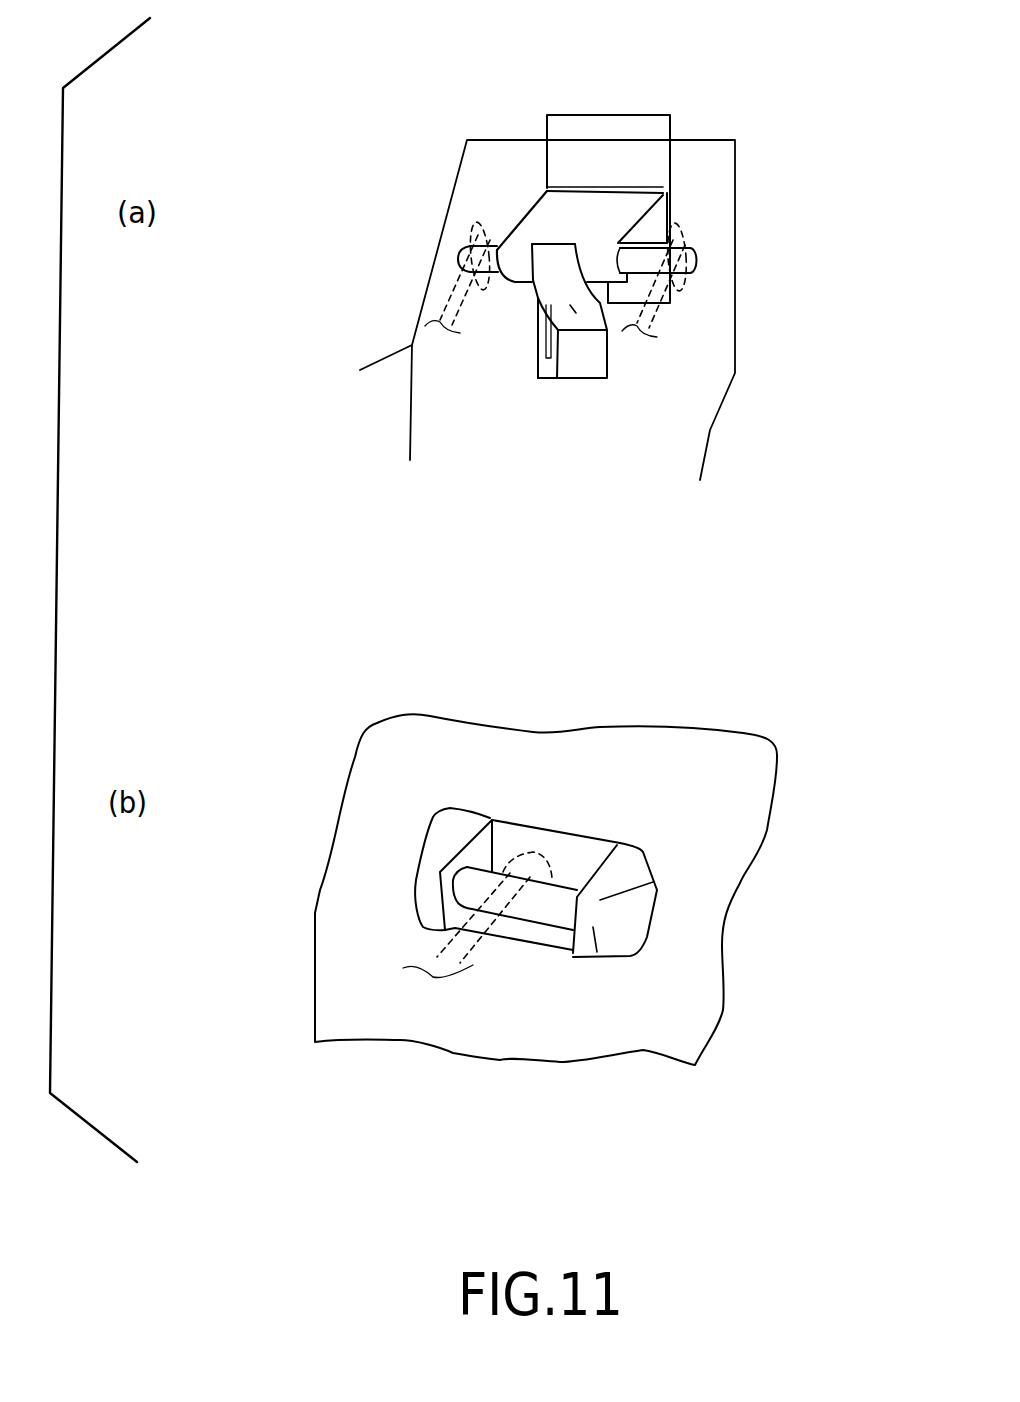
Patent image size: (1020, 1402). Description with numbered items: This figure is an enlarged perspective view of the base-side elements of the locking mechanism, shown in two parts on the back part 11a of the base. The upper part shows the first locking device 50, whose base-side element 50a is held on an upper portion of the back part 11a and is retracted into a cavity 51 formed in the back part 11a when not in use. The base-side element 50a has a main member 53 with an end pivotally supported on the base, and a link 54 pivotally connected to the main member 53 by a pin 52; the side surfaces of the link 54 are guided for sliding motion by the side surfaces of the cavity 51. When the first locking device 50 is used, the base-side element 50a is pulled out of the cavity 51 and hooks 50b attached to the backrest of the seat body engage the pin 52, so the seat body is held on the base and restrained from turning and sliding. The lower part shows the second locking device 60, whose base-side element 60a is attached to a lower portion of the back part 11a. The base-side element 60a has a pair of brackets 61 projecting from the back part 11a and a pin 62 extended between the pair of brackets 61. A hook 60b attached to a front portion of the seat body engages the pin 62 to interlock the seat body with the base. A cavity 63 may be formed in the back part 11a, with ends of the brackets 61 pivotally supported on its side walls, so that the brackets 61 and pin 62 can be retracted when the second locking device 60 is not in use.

The back part 11a is at (682, 398).
The first locking device 50 is at (510, 203).
The base-side element 50a is at (580, 168).
The hooks 50b is at (443, 287).
The cavity 51 is at (683, 297).
The pin 52 is at (470, 242).
The main member 53 is at (598, 217).
The link 54 is at (577, 308).
The second locking device 60 is at (690, 835).
The base-side element 60a is at (608, 827).
The hook 60b is at (453, 952).
The brackets 61 is at (423, 845).
The pin 62 is at (537, 908).
The cavity 63 is at (578, 840).